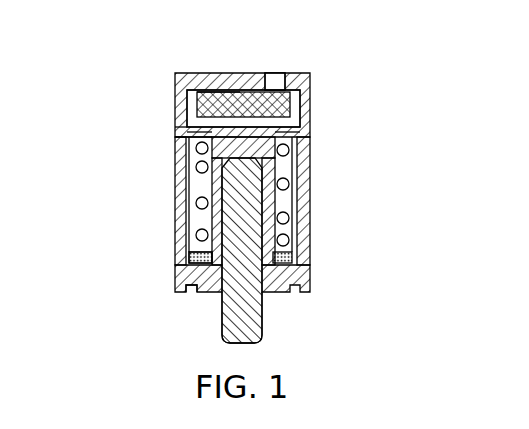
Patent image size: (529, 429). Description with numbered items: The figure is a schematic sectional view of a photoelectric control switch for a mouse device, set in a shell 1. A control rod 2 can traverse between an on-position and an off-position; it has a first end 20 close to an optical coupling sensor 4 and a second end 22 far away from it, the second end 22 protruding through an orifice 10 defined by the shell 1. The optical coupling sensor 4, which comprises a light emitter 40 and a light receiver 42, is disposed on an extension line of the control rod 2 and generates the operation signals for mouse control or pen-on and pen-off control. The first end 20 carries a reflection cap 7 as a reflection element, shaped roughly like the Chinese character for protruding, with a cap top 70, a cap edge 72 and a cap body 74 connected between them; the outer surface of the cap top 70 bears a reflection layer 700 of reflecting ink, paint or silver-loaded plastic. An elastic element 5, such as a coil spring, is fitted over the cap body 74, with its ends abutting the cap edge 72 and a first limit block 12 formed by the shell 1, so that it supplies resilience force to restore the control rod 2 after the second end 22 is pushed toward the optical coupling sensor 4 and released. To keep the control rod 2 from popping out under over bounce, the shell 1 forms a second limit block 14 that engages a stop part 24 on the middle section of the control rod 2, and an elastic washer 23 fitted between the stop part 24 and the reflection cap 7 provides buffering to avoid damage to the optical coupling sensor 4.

The shell 1 is at (303, 179).
The control rod 2 is at (348, 250).
The optical coupling sensor 4 is at (300, 106).
The elastic element 5 is at (182, 146).
The reflection cap 7 is at (150, 217).
The orifice 10 is at (213, 294).
The first limit block 12 is at (178, 133).
The second limit block 14 is at (192, 291).
The first end 20 is at (262, 203).
The second end 22 is at (248, 325).
The elastic washer 23 is at (190, 263).
The stop part 24 is at (292, 262).
The light emitter 40 is at (225, 92).
The light receiver 42 is at (267, 92).
The cap top 70 is at (189, 165).
The cap edge 72 is at (200, 250).
The cap body 74 is at (212, 206).
The reflection layer 700 is at (300, 133).